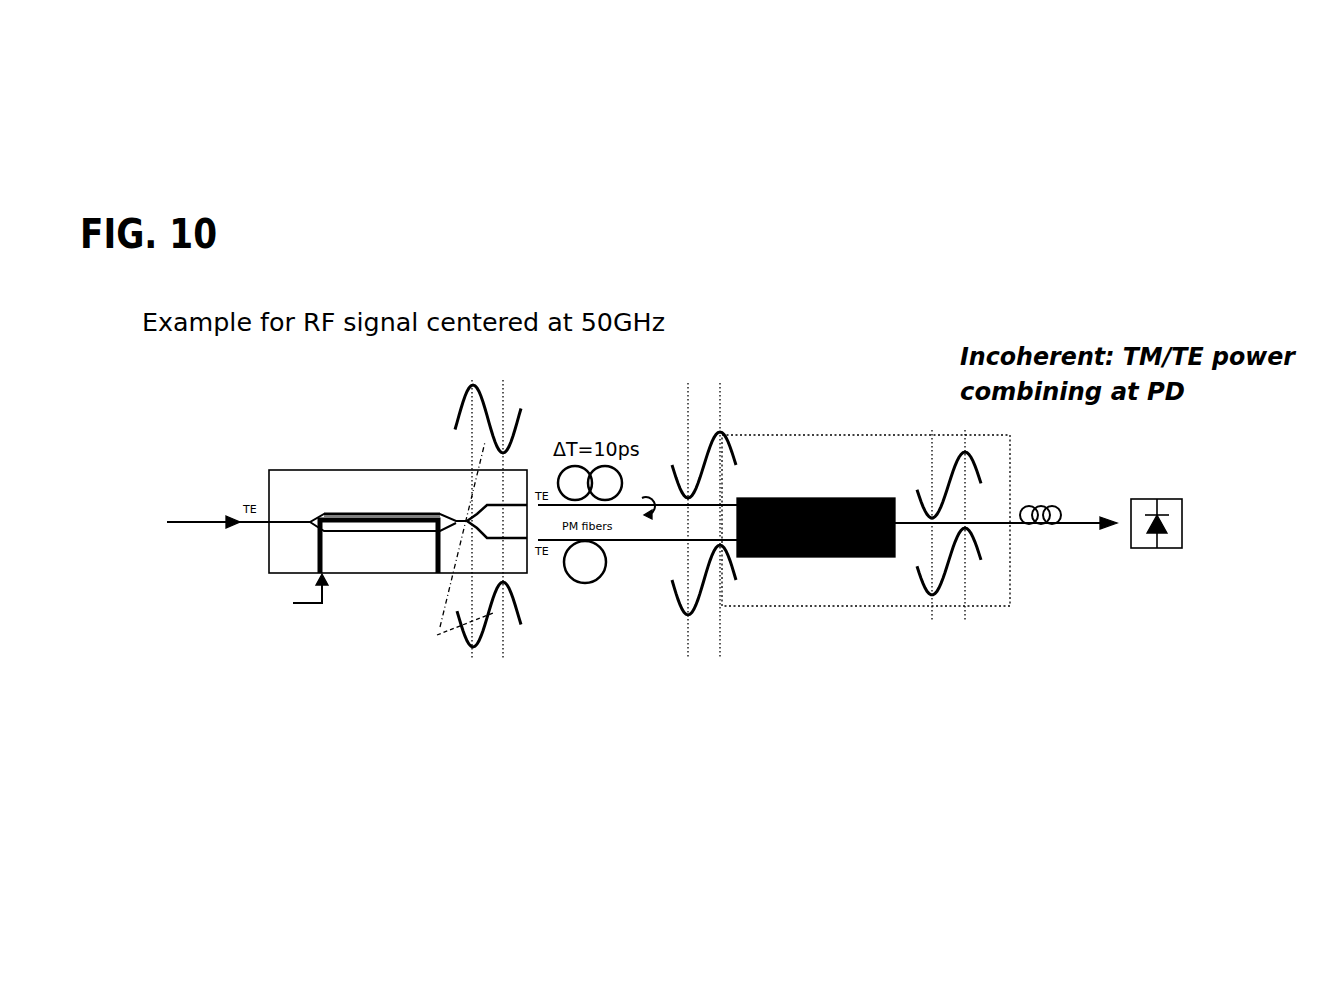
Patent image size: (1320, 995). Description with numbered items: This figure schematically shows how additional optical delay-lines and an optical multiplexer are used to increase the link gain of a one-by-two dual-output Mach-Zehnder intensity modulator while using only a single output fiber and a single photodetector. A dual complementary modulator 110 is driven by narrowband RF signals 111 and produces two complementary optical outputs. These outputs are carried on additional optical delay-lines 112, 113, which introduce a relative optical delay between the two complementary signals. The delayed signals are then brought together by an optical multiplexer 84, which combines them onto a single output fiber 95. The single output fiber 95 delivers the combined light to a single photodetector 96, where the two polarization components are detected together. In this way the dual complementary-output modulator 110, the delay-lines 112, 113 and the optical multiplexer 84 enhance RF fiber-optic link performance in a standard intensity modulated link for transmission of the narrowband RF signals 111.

The dual complementary modulator 110 is at (342, 470).
The narrowband RF signals 111 is at (297, 612).
The additional optical delay-line 112 is at (662, 493).
The additional optical delay-line 113 is at (643, 543).
The optical multiplexer 84 is at (823, 425).
The single output fiber 95 is at (1075, 523).
The single photodetector 96 is at (1183, 534).